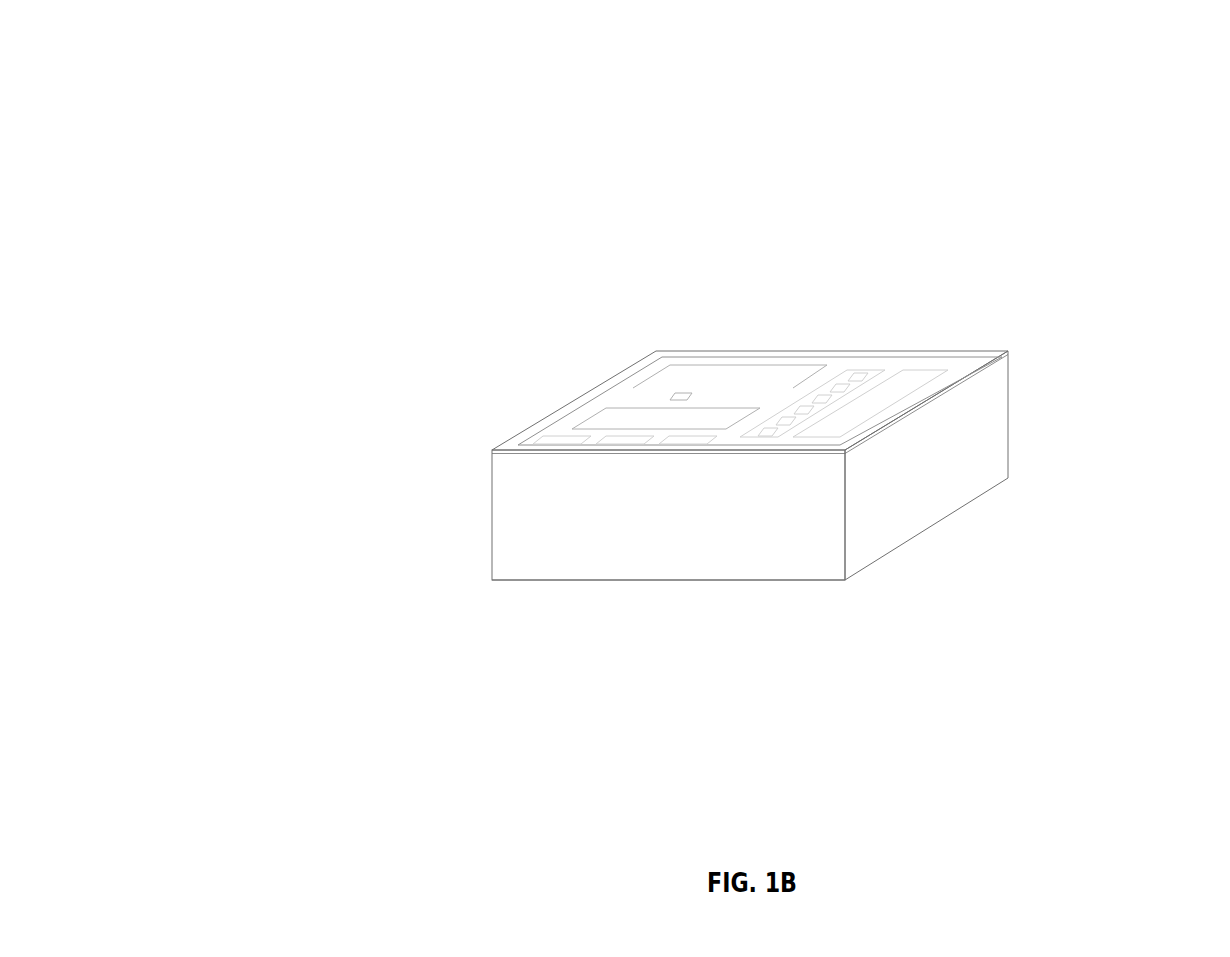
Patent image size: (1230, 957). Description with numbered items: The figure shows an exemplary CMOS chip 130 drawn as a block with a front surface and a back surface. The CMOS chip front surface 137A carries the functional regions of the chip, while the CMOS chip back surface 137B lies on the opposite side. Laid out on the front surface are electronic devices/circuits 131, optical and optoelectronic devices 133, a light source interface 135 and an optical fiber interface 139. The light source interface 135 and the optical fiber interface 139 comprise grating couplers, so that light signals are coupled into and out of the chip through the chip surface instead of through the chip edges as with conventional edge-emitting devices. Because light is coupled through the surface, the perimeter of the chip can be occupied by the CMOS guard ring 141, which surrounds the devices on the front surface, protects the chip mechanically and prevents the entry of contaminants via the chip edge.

The CMOS chip 130 is at (350, 102).
The electronic devices/circuits 131 is at (916, 371).
The optical and optoelectronic devices 133 is at (643, 370).
The light source interface 135 is at (680, 381).
The CMOS chip front surface 137A is at (822, 349).
The CMOS chip back surface 137B is at (803, 604).
The optical fiber interface 139 is at (865, 352).
The CMOS guard ring 141 is at (1011, 369).